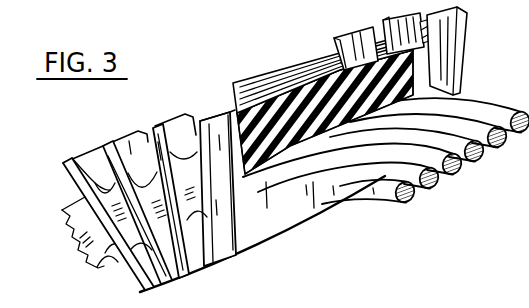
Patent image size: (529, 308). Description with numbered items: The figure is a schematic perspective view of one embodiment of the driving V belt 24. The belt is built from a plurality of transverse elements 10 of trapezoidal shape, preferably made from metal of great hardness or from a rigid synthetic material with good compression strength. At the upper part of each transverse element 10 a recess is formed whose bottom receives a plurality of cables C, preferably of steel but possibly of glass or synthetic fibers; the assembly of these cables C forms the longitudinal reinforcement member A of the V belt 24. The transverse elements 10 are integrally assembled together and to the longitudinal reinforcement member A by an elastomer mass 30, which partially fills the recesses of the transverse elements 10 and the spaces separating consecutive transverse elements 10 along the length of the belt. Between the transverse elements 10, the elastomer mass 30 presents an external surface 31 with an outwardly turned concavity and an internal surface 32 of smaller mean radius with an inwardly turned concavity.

The transverse elements 10 is at (262, 226).
The V belt 24 is at (528, 58).
The elastomer mass 30 is at (313, 110).
The external surface 31 is at (70, 158).
The internal surface 32 is at (136, 246).
The longitudinal reinforcement member A is at (463, 186).
The cables C is at (397, 166).